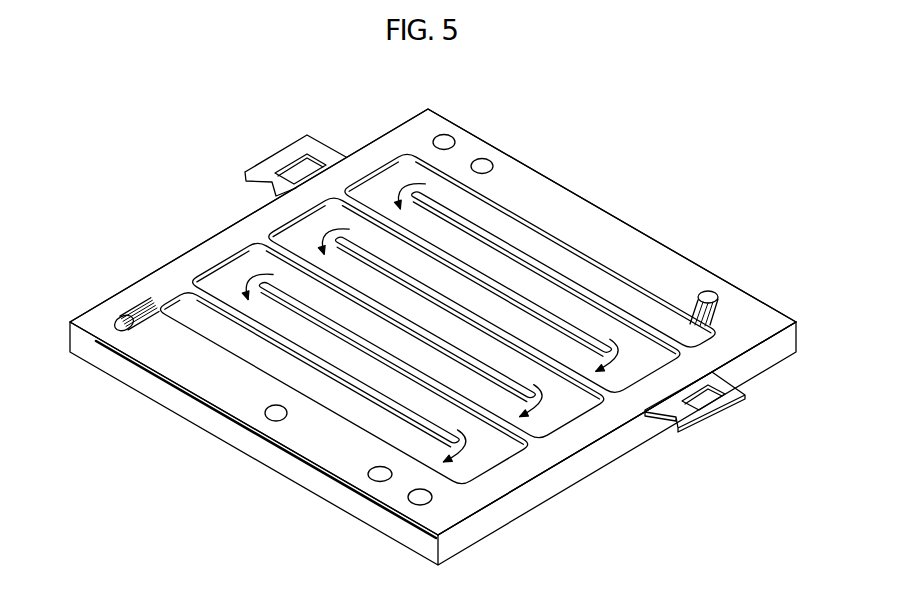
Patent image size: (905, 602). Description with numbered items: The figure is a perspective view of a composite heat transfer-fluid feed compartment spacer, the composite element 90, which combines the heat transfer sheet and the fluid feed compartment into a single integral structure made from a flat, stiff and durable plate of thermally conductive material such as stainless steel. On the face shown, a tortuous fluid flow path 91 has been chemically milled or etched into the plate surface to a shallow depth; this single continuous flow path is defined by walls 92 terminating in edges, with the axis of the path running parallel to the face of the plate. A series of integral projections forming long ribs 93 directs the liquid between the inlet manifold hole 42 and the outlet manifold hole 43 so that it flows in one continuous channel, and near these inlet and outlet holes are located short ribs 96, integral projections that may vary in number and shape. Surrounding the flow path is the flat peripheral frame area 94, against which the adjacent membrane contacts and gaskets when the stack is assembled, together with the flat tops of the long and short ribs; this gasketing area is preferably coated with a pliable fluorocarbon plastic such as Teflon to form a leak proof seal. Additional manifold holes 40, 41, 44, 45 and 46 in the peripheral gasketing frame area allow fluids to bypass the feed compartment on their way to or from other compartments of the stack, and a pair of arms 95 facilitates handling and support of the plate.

The composite element 90 is at (388, 128).
The tortuous fluid flow path 91 is at (487, 458).
The walls 92 is at (525, 233).
The long ribs 93 is at (592, 268).
The peripheral frame area 94 is at (244, 234).
The arms 95 is at (288, 138).
The short ribs 96 is at (138, 310).
The manifold hole 40 is at (420, 504).
The manifold hole 41 is at (273, 412).
The inlet manifold hole 42 is at (118, 326).
The outlet manifold hole 43 is at (708, 296).
The manifold hole 44 is at (484, 163).
The manifold hole 45 is at (448, 142).
The manifold hole 46 is at (377, 476).